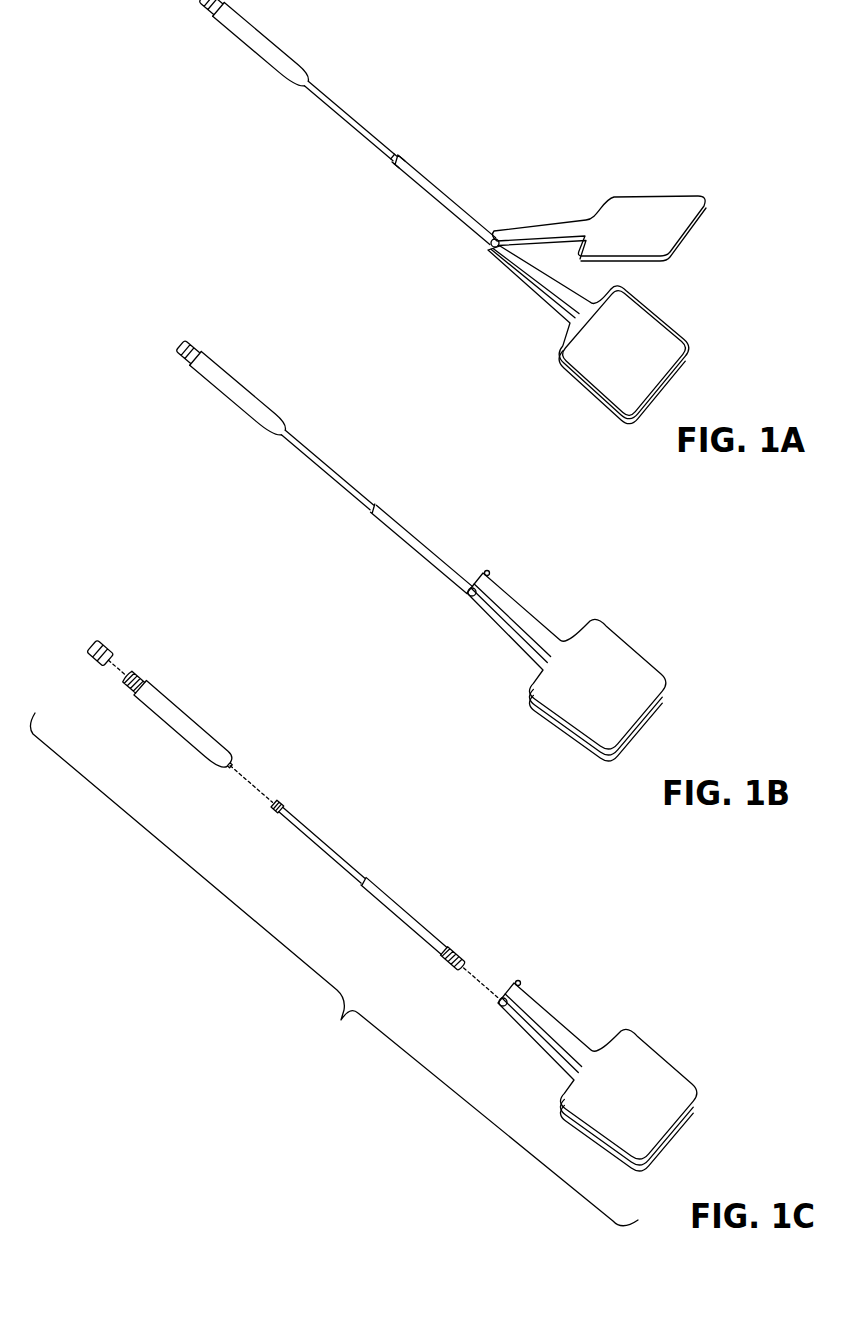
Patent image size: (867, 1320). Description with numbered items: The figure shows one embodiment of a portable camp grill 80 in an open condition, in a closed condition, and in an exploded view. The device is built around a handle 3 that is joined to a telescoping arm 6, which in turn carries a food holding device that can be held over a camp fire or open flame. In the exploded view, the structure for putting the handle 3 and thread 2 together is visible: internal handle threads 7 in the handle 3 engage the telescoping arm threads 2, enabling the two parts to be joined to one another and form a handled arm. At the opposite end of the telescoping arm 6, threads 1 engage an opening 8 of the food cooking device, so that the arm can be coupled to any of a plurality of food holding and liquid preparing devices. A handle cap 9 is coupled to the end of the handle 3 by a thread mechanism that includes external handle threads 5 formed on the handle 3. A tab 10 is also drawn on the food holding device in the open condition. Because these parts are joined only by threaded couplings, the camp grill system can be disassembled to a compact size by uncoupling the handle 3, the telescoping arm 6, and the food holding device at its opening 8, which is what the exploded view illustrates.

In FIG. 1C, the threads 1 is at (452, 944).
In FIG. 1C, the telescoping arm threads 2 is at (281, 797).
In FIG. 1A, the handle 3 is at (287, 60).
In FIG. 1C, the handle 3 is at (192, 727).
In FIG. 1C, the external handle threads 5 is at (139, 677).
In FIG. 1A, the telescoping arm 6 is at (395, 153).
In FIG. 1C, the internal handle threads 7 is at (230, 768).
In FIG. 1C, the opening 8 is at (503, 994).
In FIG. 1C, the handle cap 9 is at (100, 643).
In FIG. 1A, the tab 10 is at (663, 205).
In FIG. 1A, the portable camp grill 80 is at (463, 212).
In FIG. 1B, the portable camp grill 80 is at (373, 547).
In FIG. 1C, the portable camp grill 80 is at (341, 1020).